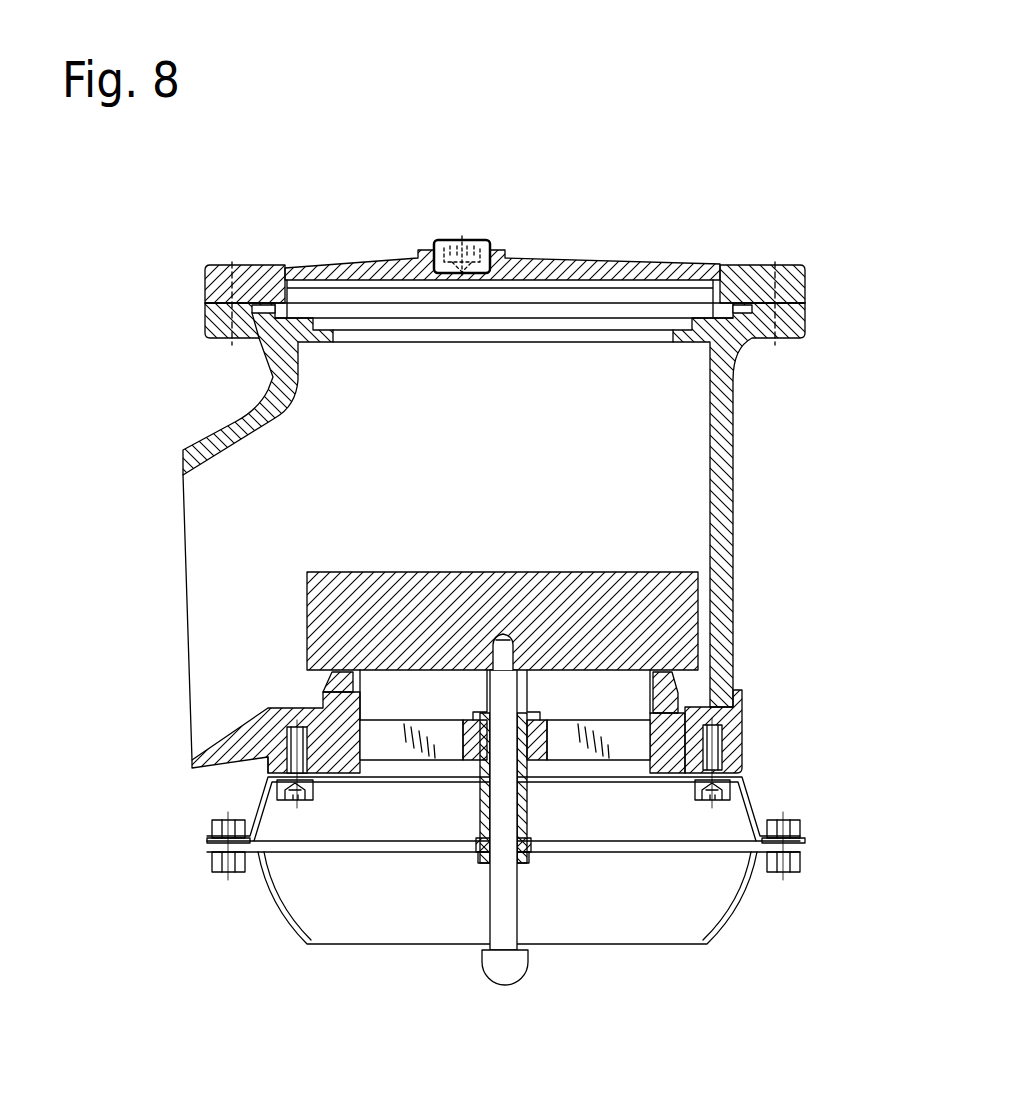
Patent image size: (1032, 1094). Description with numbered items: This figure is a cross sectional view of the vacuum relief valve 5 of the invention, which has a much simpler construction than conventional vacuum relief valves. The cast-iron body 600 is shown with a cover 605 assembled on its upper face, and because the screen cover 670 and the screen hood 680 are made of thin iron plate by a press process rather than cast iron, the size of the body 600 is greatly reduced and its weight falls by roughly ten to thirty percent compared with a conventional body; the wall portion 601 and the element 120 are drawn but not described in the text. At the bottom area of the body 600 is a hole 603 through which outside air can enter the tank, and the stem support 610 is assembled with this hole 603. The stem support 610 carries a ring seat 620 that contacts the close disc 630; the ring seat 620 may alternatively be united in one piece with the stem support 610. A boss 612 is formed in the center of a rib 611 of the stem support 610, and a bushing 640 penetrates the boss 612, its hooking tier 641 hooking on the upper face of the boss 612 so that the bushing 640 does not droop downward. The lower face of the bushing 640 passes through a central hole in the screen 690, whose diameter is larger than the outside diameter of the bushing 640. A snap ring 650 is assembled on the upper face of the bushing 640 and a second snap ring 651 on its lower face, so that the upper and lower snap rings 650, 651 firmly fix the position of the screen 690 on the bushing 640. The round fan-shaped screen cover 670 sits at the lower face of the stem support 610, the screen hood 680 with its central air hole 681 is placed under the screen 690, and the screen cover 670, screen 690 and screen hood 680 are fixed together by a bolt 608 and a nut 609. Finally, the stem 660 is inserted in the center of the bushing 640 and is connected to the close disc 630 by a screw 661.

The vacuum relief valve 5 is at (655, 132).
The nut 120 is at (278, 783).
The body 600 is at (730, 436).
The housing wall 601 is at (197, 443).
The hole 603 is at (683, 697).
The cover 605 is at (361, 268).
The bolt 608 is at (795, 827).
The nut 609 is at (797, 865).
The stem support 610 is at (737, 757).
The rib 611 is at (428, 732).
The boss 612 is at (537, 720).
The ring seat 620 is at (332, 675).
The close disc 630 is at (617, 585).
The bushing 640 is at (481, 810).
The hooking tier 641 is at (480, 712).
The snap ring 650 is at (523, 842).
The snap ring 651 is at (483, 853).
The stem 660 is at (497, 927).
The screw 661 is at (490, 650).
The screen cover 670 is at (745, 792).
The screen hood 680 is at (717, 907).
The air hole 681 is at (672, 922).
The screen 690 is at (283, 847).